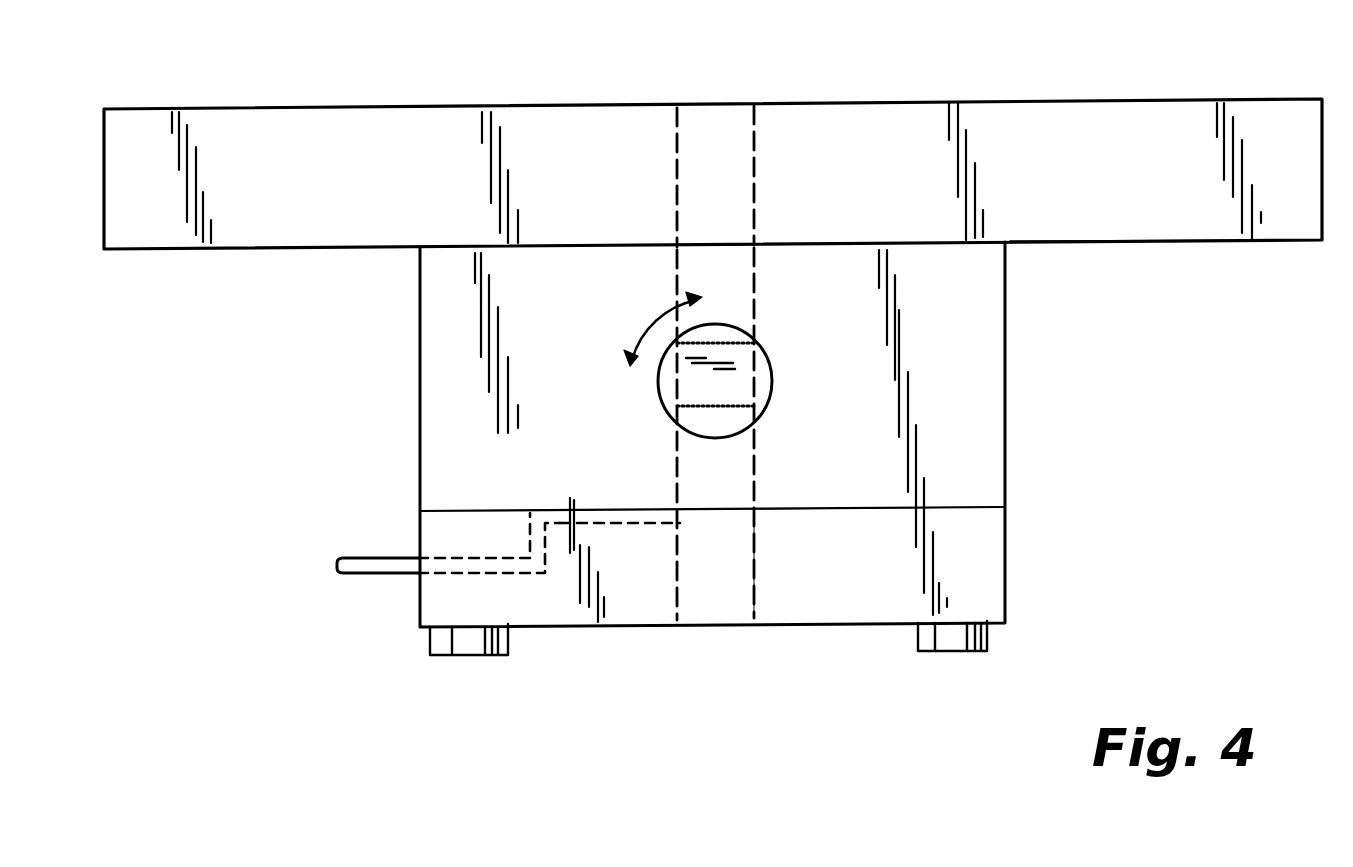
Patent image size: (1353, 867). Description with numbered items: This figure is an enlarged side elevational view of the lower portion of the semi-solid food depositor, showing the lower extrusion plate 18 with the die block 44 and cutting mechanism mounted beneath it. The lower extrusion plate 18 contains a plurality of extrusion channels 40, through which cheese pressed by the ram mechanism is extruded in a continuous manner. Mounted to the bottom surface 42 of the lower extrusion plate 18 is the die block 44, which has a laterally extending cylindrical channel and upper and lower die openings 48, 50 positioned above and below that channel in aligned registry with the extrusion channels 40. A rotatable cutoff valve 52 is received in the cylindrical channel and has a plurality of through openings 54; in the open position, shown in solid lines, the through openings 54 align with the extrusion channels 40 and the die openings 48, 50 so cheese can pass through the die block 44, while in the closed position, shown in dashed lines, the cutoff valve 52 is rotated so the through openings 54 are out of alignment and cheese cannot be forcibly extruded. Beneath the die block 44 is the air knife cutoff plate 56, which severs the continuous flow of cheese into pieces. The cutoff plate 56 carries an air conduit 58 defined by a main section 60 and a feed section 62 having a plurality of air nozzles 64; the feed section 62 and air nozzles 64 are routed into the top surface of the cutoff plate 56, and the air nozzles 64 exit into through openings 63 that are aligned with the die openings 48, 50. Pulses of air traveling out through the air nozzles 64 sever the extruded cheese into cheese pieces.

The lower extrusion plate 18 is at (208, 126).
The extrusion channels 40 is at (717, 192).
The bottom surface 42 is at (1190, 243).
The die block 44 is at (980, 392).
The upper die opening 48 is at (722, 295).
The lower die opening 50 is at (727, 481).
The cutoff valve 52 is at (773, 362).
The through openings 54 is at (662, 378).
The air knife cutoff plate 56 is at (965, 557).
The air conduit 58 is at (365, 578).
The main section 60 is at (490, 568).
The feed section 62 is at (557, 510).
The through openings 63 is at (725, 563).
The air nozzles 64 is at (636, 516).